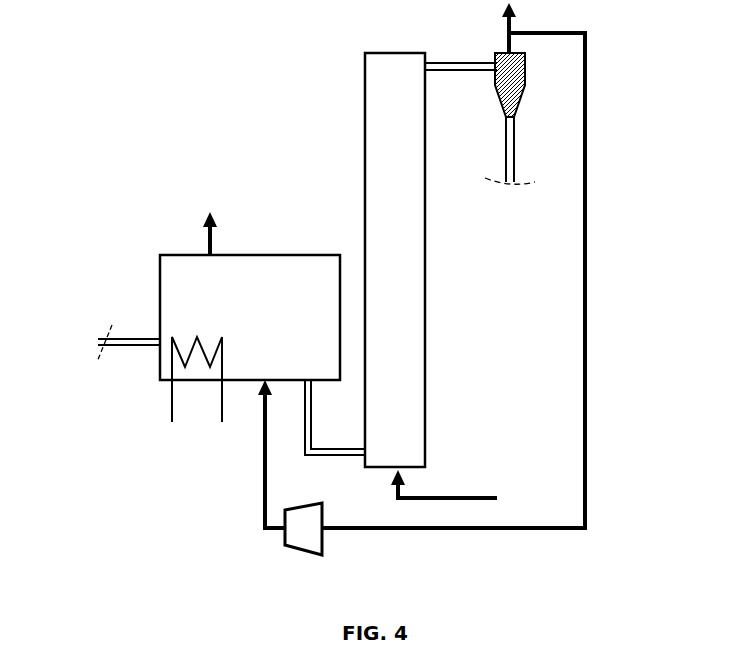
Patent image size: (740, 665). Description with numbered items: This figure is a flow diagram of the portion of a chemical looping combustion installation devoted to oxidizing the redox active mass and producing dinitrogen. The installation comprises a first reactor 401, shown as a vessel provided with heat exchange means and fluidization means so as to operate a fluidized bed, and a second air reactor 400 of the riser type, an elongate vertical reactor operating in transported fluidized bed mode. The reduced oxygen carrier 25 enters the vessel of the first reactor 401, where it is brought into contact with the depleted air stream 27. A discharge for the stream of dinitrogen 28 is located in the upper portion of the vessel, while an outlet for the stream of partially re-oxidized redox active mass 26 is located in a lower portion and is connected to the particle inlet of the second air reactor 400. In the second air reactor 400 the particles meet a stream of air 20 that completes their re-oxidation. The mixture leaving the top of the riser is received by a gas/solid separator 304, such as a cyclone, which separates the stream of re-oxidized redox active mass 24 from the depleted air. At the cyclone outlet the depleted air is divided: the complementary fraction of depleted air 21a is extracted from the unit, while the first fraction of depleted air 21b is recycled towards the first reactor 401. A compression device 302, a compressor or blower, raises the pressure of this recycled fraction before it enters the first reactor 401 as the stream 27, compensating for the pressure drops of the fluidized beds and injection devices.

The second air reactor 400 is at (388, 140).
The first reactor 401 is at (180, 290).
The gas/solid separator 304 is at (507, 70).
The stream of re-oxidized redox active mass 24 is at (513, 140).
The second complementary fraction of depleted air 21a is at (512, 12).
The first fraction of depleted air 21b is at (585, 288).
The stream of dinitrogen 28 is at (203, 238).
The reduced oxygen carrier 25 is at (125, 348).
The stream of pressurized depleted air 27 is at (265, 472).
The stream of partially re-oxidized redox active mass 26 is at (303, 438).
The compression device 302 is at (305, 537).
The stream of air 20 is at (448, 497).